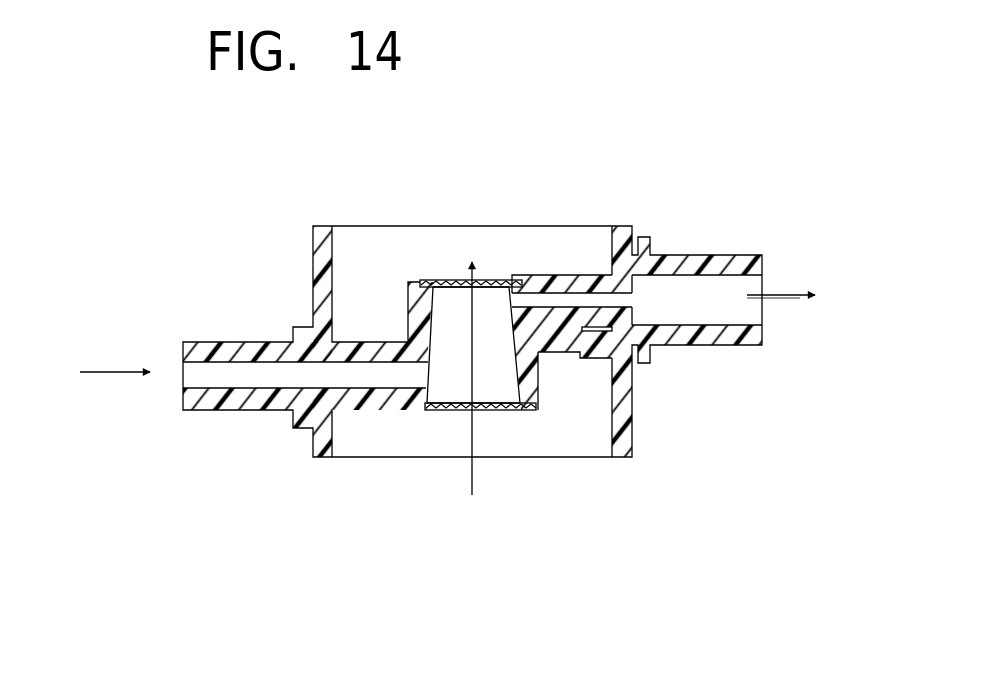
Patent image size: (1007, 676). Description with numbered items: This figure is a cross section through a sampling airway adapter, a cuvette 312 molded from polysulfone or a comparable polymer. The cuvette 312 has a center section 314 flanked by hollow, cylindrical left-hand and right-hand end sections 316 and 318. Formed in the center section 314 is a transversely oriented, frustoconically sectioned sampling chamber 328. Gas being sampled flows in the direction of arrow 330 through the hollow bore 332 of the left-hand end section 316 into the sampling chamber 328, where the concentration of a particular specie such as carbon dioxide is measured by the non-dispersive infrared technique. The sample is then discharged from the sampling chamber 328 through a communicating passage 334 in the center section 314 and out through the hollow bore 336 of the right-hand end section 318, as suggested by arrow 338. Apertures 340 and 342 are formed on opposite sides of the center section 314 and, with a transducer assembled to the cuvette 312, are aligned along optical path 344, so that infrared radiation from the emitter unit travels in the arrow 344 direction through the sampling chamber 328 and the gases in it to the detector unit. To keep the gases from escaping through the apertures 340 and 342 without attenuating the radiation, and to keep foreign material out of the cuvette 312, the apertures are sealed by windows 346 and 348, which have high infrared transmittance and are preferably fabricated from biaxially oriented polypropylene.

The cuvette 312 is at (618, 183).
The center section 314 is at (583, 268).
The left-hand end section 316 is at (207, 342).
The right-hand end section 318 is at (731, 255).
The sampling chamber 328 is at (495, 375).
The arrow 330 is at (132, 371).
The hollow bore 332 is at (203, 388).
The communicating passage 334 is at (522, 283).
The hollow bore 336 is at (747, 283).
The arrow 338 is at (773, 295).
The aperture 340 is at (420, 281).
The aperture 342 is at (428, 410).
The optical path 344 is at (472, 481).
The window 346 is at (495, 281).
The window 348 is at (506, 410).